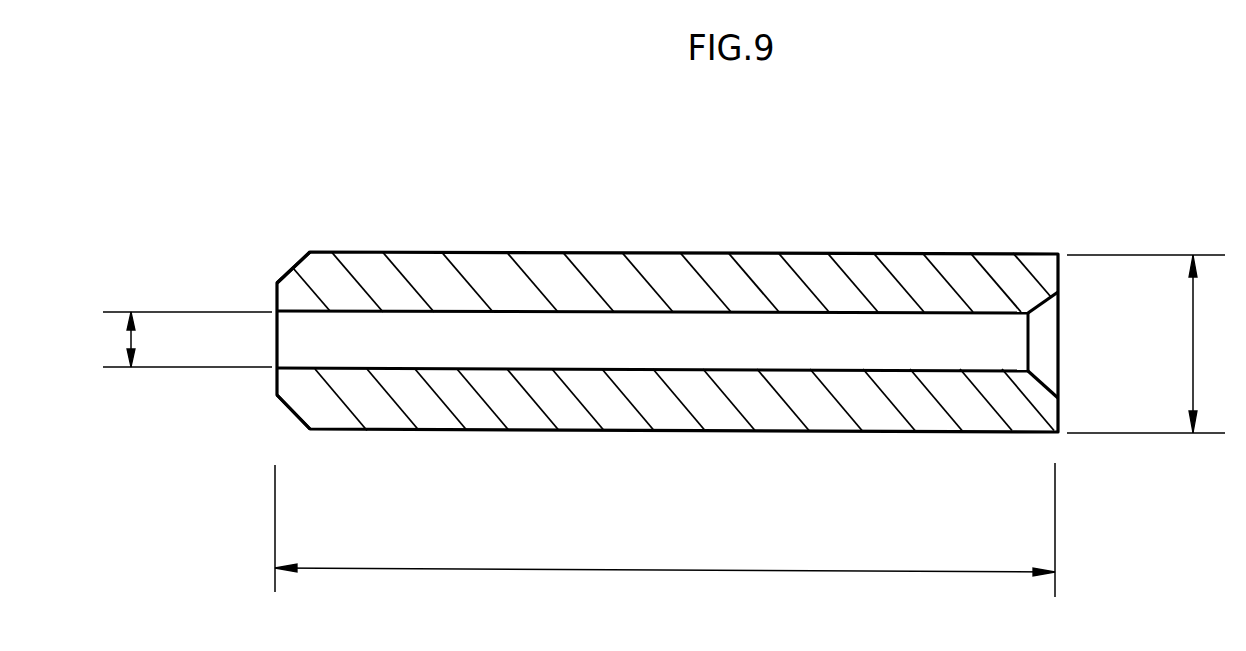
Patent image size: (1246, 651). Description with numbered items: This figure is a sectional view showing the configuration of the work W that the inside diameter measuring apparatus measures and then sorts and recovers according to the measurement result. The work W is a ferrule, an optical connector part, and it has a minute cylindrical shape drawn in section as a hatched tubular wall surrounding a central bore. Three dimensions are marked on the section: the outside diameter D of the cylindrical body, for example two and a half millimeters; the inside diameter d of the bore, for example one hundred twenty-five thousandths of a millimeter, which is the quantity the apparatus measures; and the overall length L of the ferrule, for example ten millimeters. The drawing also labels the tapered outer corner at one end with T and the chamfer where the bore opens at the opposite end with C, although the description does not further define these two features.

The work W is at (707, 252).
The tapered end chamfer T is at (294, 267).
The inner chamfer C is at (1047, 300).
The inside diameter d is at (181, 339).
The outside diameter D is at (1147, 344).
The length L is at (665, 537).